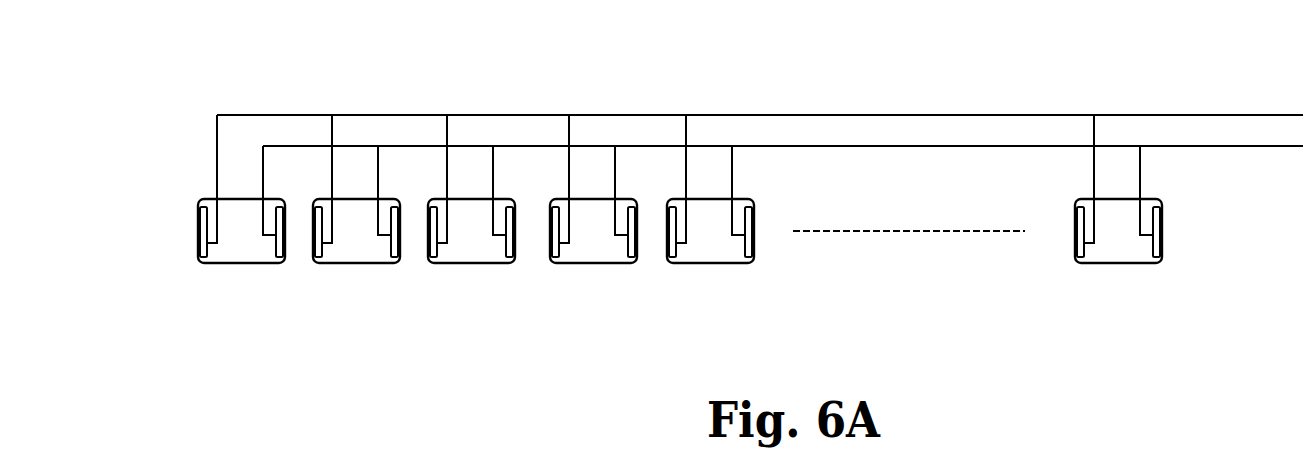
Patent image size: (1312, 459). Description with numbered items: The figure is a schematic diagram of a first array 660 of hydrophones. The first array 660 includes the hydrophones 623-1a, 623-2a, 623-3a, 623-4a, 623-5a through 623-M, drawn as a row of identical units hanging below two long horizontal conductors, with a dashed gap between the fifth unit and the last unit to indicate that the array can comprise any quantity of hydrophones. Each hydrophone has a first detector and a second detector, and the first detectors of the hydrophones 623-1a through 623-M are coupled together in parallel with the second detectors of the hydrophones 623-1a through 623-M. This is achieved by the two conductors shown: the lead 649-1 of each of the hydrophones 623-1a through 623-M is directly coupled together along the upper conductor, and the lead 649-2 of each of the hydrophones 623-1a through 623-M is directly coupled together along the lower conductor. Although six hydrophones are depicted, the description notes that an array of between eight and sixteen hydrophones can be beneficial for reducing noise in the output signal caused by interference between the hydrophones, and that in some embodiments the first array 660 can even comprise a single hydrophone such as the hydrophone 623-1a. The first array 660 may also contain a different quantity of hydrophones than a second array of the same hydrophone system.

The first array 660 is at (700, 191).
The lead 649-1 is at (1173, 115).
The lead 649-2 is at (1268, 146).
The hydrophone 623-1a is at (203, 263).
The hydrophone 623-2a is at (318, 263).
The hydrophone 623-3a is at (433, 263).
The hydrophone 623-4a is at (555, 263).
The hydrophone 623-5a is at (672, 263).
The hydrophone 623-M is at (1080, 263).